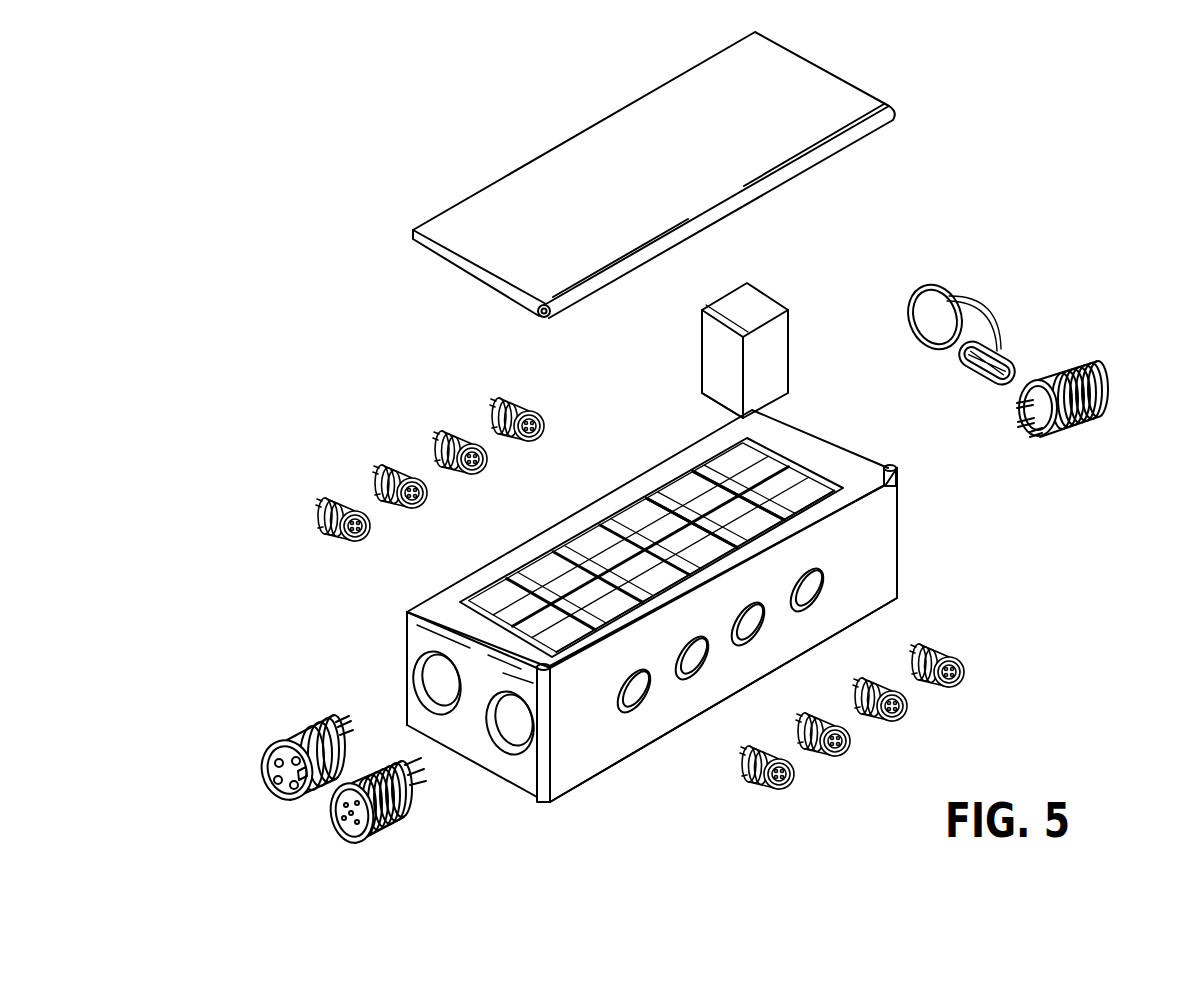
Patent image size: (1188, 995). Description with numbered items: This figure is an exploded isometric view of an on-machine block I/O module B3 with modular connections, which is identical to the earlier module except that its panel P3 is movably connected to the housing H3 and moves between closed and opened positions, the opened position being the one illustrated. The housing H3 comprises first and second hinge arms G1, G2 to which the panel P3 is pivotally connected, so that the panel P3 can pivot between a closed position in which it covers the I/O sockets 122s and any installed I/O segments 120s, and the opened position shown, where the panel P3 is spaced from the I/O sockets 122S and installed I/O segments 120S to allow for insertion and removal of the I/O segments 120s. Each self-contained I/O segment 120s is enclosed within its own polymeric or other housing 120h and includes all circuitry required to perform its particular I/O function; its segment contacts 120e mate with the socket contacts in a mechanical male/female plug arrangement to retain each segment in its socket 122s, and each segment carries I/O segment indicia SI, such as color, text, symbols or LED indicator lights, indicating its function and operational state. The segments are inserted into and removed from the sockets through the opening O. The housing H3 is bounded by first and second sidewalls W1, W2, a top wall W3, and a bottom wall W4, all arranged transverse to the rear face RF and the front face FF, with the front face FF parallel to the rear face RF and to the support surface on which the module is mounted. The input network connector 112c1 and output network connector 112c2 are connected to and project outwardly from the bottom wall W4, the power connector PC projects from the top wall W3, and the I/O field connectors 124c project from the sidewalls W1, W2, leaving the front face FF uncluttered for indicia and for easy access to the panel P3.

The panel P3 is at (475, 210).
The I/O segment indicia SI is at (718, 313).
The I/O segment 120s is at (780, 328).
The I/O segment housing 120h is at (780, 365).
The segment contacts 120e is at (710, 403).
The I/O socket 122s is at (733, 453).
The opening O is at (760, 462).
The front face FF is at (841, 457).
The block I/O module B3 is at (907, 260).
The power connector PC is at (1095, 372).
The top wall W3 is at (897, 522).
The housing H3 is at (890, 580).
The second hinge arm G2 is at (885, 487).
The rear face RF is at (843, 630).
The I/O field connector 124c is at (445, 440).
The I/O segment 120S is at (757, 523).
The I/O socket 122S is at (630, 612).
The first hinge arm G1 is at (552, 665).
The first sidewall W1 is at (587, 767).
The bottom wall W4 is at (503, 767).
The second sidewall W2 is at (405, 648).
The output network connector 112c2 is at (262, 770).
The input network connector 112c1 is at (335, 825).